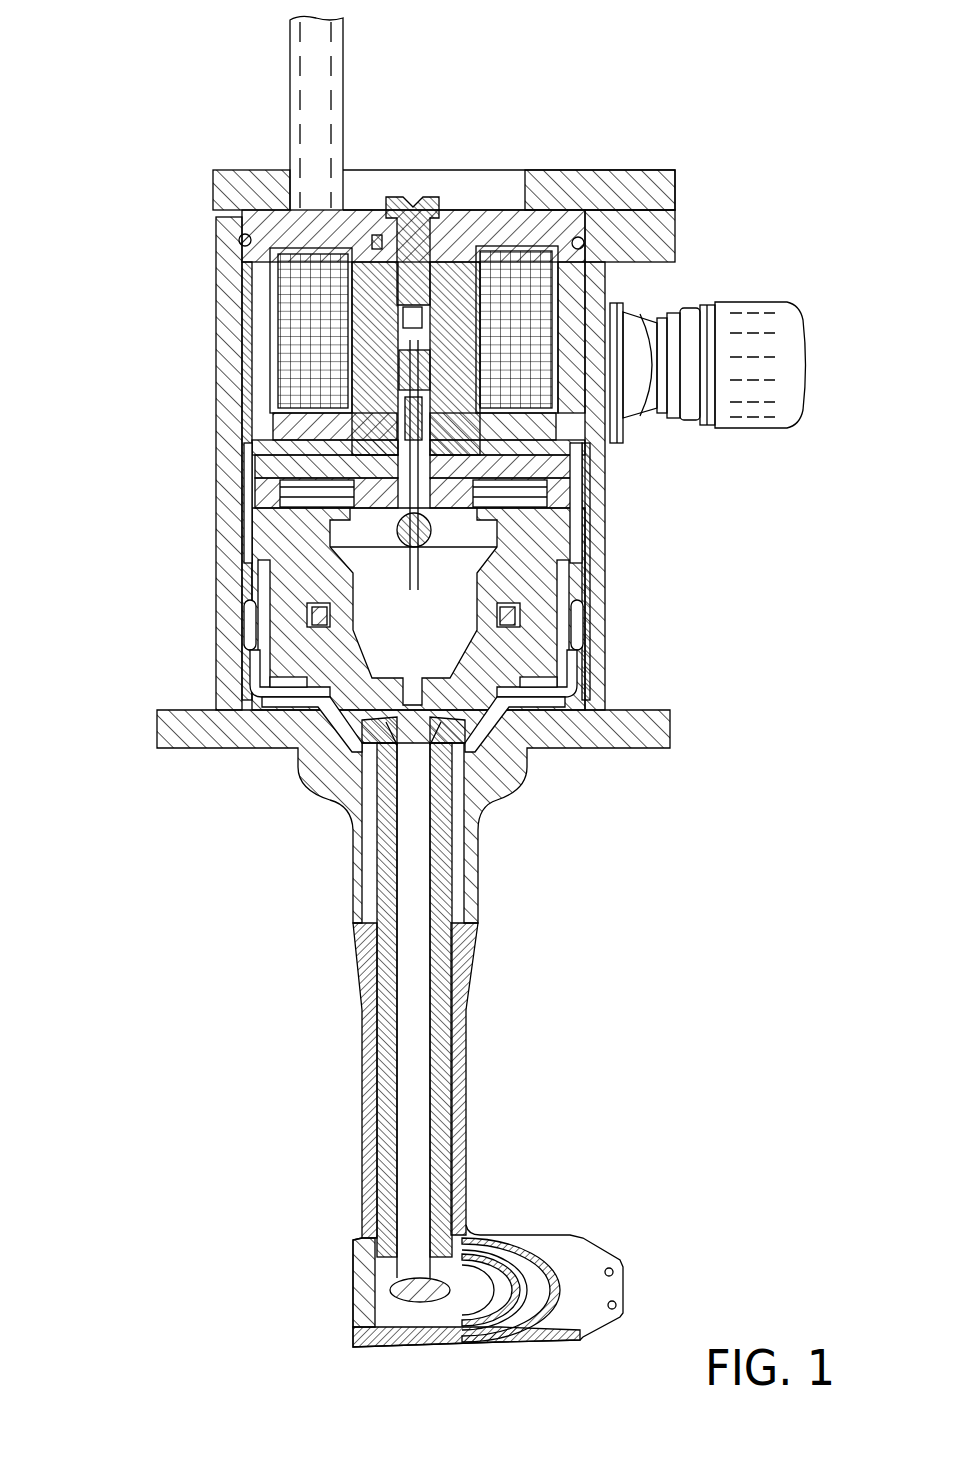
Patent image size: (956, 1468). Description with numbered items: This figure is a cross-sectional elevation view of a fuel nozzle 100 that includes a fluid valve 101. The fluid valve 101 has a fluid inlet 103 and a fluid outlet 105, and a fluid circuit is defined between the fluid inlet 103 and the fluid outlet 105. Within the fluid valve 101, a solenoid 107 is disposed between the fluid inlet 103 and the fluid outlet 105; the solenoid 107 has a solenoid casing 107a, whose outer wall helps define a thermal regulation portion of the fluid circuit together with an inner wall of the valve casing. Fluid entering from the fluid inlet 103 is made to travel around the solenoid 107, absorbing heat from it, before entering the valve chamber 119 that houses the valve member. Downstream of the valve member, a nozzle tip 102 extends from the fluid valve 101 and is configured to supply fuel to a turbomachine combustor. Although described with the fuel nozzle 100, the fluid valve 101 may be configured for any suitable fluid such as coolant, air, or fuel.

The fuel nozzle 100 is at (138, 138).
The fluid valve 101 is at (218, 402).
The nozzle tip 102 is at (370, 1057).
The fluid inlet 103 is at (650, 335).
The fluid outlet 105 is at (472, 876).
The solenoid 107 is at (288, 322).
The solenoid casing 107a is at (493, 248).
The valve chamber 119 is at (400, 524).